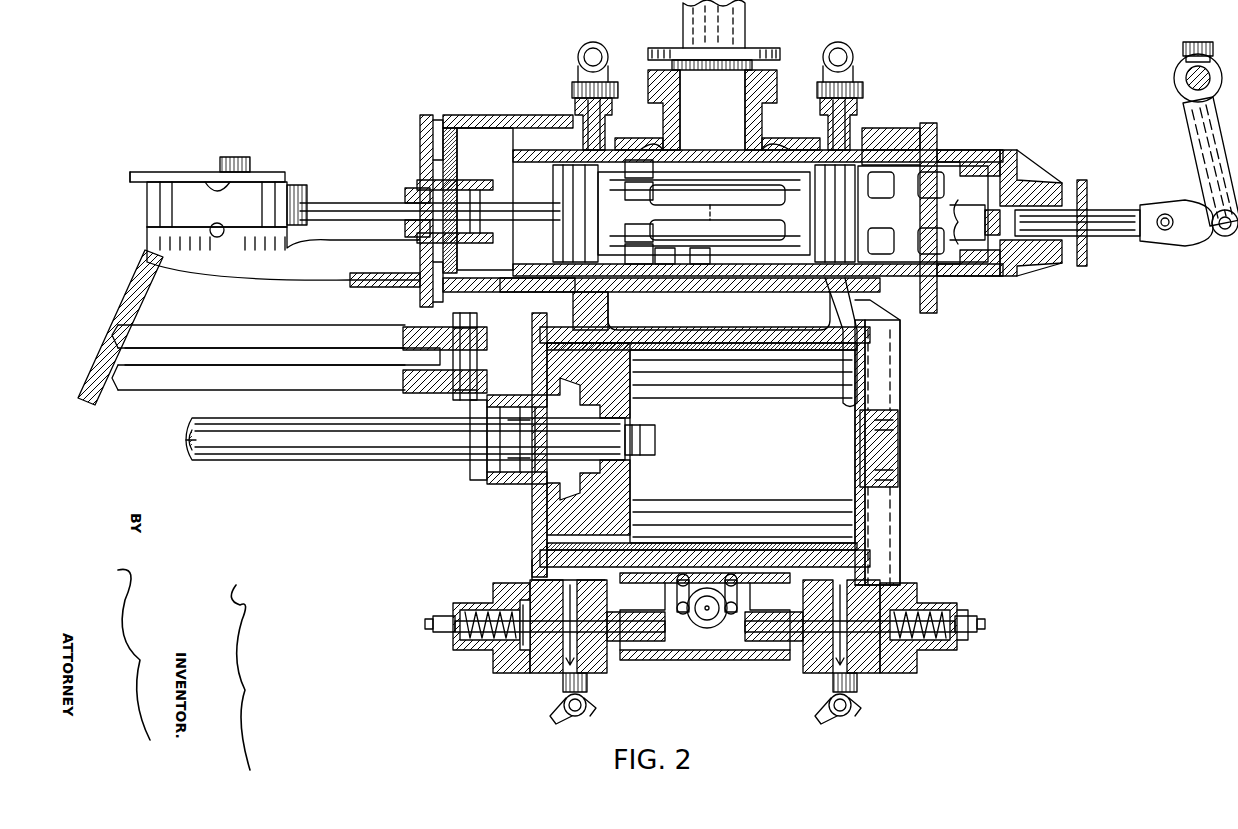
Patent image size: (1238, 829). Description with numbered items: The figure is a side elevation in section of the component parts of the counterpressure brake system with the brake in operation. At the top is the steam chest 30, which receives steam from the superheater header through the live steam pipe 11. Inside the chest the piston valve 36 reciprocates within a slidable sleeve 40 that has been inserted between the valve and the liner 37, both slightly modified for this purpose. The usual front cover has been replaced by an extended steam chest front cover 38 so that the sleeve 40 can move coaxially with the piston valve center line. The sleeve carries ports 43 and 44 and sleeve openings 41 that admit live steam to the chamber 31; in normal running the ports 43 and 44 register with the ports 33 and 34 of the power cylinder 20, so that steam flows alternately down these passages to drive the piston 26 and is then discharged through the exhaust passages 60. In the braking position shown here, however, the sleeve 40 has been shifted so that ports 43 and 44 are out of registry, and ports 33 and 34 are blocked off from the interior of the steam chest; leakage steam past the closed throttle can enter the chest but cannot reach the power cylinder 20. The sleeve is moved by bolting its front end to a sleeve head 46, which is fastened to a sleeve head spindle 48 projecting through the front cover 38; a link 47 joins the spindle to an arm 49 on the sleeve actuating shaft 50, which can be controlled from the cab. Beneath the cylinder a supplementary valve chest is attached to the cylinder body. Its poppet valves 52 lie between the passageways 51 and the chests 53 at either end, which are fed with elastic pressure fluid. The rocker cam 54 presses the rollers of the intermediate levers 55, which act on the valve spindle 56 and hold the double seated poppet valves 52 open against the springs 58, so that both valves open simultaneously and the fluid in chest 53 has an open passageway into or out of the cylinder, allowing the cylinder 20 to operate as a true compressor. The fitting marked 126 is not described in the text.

The live steam pipe 11 is at (722, 42).
The ring fittings 126 is at (717, 81).
The liner 37 is at (525, 148).
The exhaust passages 60 is at (681, 203).
The steam chest 30 is at (751, 200).
The port 43 is at (640, 160).
The piston valve 36 is at (577, 213).
The port 44 is at (880, 236).
The slidable sleeve 40 is at (955, 162).
The extended steam chest front cover 38 is at (1022, 172).
The sleeve head 46 is at (1000, 278).
The sleeve head spindle 48 is at (1108, 236).
The link 47 is at (1176, 236).
The arm 49 is at (1191, 166).
The sleeve actuating shaft 50 is at (1168, 72).
The port 33 is at (590, 305).
The chamber 31 is at (668, 262).
The sleeve openings 41 is at (692, 265).
The piston 26 is at (622, 392).
The power cylinder 20 is at (701, 446).
The port 34 is at (843, 378).
The poppet valves 52 is at (535, 600).
The chest 53 is at (705, 643).
The springs 58 is at (948, 645).
The passageways 51 is at (600, 660).
The rocker cam 54 is at (705, 616).
The intermediate levers 55 is at (740, 600).
The valve spindle 56 is at (672, 625).